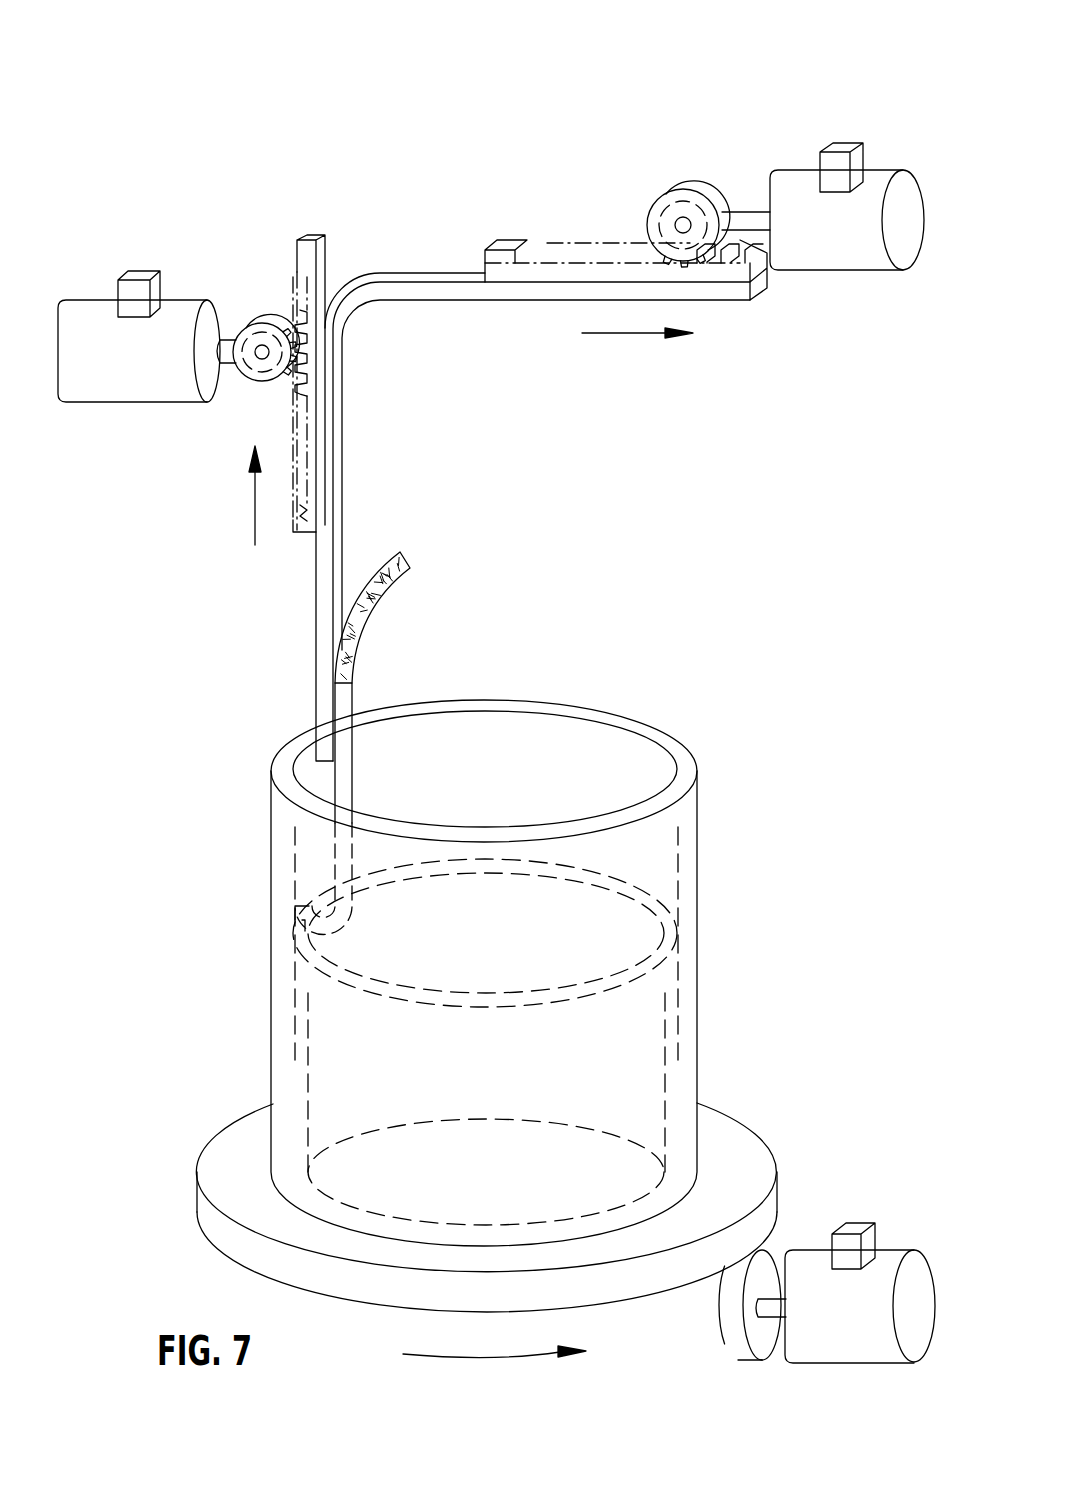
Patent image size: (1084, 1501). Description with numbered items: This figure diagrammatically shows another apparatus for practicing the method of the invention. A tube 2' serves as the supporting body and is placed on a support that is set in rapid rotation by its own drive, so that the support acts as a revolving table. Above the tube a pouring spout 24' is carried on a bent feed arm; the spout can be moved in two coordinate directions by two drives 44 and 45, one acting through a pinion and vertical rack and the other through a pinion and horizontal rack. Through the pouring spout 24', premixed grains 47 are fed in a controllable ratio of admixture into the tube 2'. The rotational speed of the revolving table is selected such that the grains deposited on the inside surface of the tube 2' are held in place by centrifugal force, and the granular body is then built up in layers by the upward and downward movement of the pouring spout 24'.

The drive 44 is at (252, 316).
The drive 45 is at (690, 212).
The premixed grains 47 is at (388, 557).
The pouring spout 24' is at (456, 776).
The tube 2' is at (574, 973).